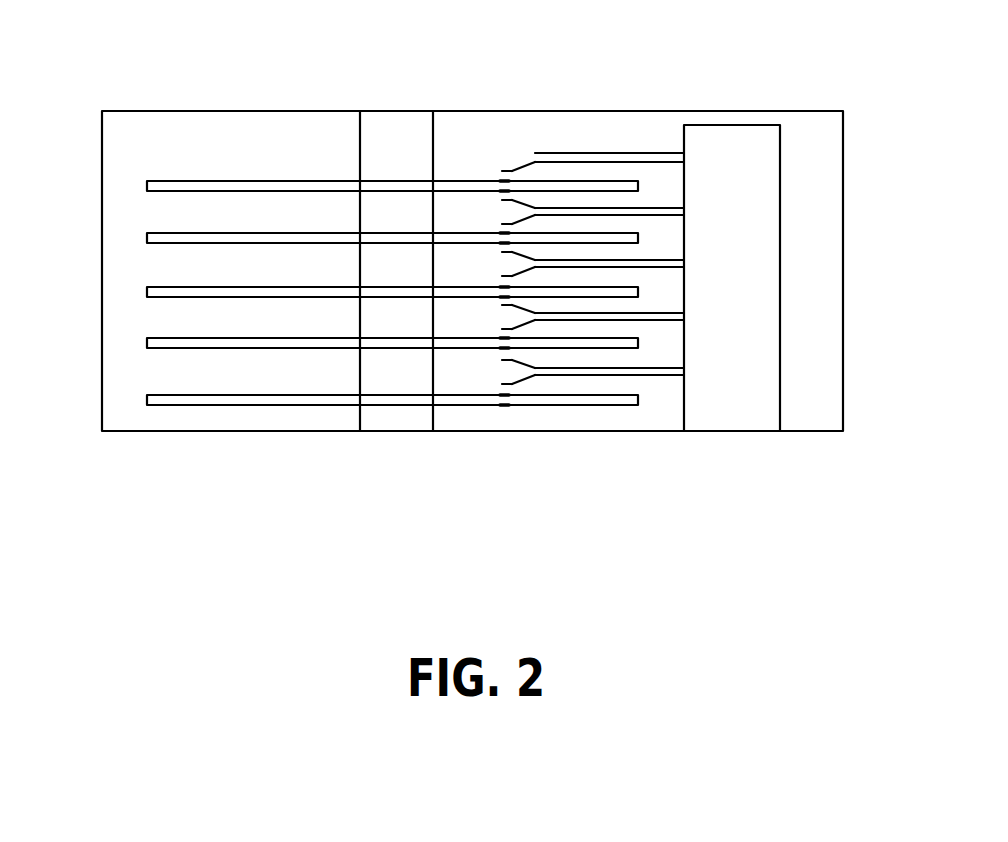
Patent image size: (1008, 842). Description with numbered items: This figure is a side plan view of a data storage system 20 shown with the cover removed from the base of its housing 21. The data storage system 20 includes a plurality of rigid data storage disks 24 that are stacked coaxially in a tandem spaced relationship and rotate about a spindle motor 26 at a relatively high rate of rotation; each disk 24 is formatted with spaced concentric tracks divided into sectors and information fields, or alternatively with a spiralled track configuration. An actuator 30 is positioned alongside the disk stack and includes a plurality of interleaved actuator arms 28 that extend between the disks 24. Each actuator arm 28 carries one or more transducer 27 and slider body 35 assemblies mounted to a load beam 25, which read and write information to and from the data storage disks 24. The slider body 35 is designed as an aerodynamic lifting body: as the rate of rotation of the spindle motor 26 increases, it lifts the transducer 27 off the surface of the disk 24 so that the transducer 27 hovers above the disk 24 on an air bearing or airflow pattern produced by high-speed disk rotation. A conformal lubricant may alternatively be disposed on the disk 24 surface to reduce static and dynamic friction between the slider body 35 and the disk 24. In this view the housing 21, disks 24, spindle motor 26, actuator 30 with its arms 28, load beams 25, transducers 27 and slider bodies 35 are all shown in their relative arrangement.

The data storage system 20 is at (741, 77).
The housing 21 is at (843, 308).
The data storage disks 24 is at (148, 185).
The load beam 25 is at (530, 162).
The spindle motor 26 is at (389, 423).
The transducer 27 is at (502, 182).
The actuator arms 28 is at (591, 153).
The actuator 30 is at (730, 402).
The slider body 35 is at (503, 171).